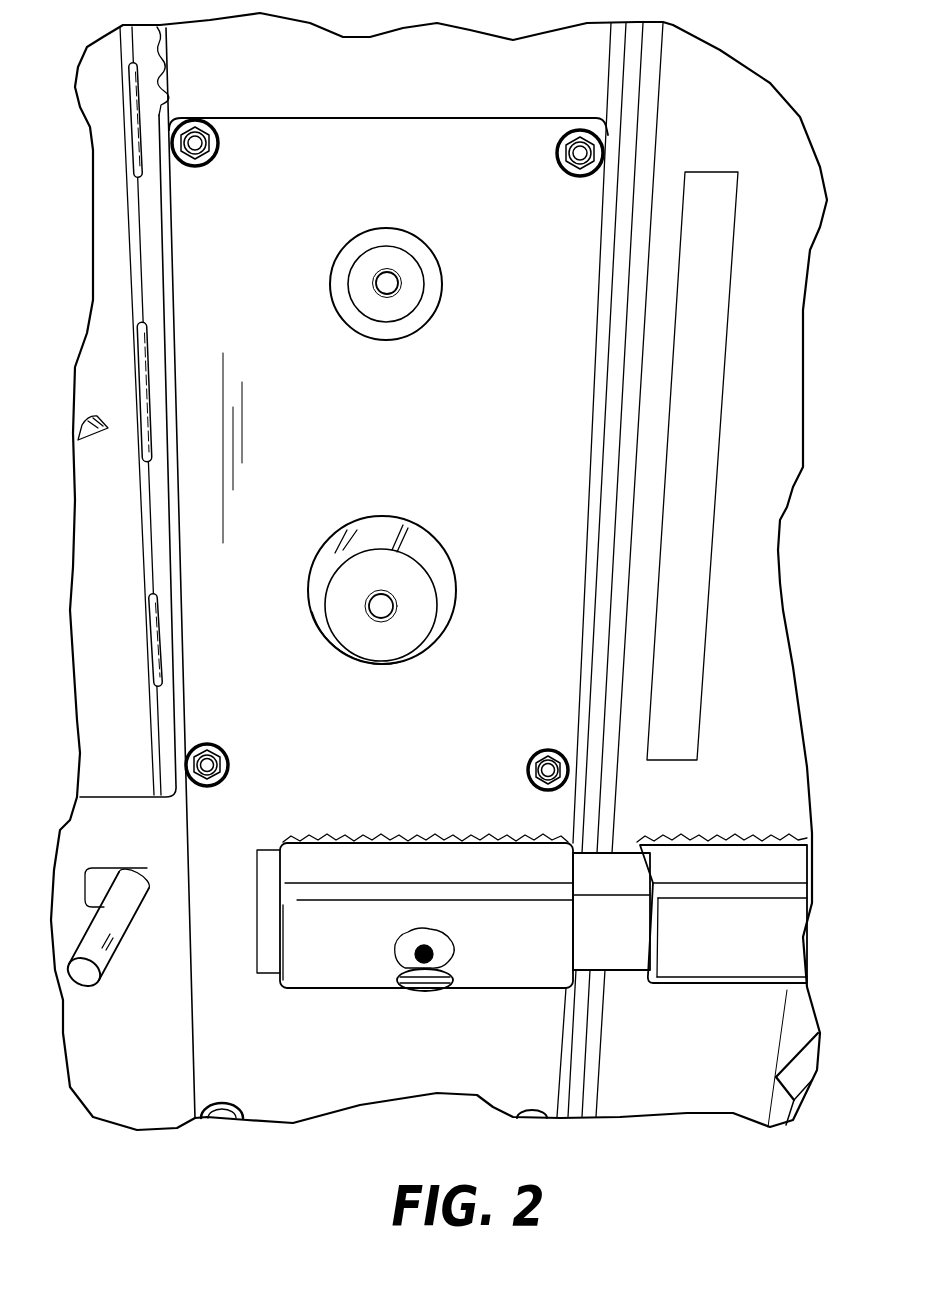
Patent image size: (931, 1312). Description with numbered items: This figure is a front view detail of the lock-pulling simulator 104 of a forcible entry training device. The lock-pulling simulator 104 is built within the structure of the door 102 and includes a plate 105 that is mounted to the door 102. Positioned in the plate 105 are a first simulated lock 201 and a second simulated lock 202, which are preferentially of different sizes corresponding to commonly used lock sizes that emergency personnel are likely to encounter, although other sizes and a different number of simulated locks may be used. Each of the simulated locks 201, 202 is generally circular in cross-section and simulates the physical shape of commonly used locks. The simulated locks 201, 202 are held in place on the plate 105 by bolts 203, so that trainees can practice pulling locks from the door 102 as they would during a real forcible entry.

The door 102 is at (452, 82).
The lock-pulling simulator 104 is at (677, 1063).
The plate 105 is at (510, 436).
The first simulated lock 201 is at (367, 519).
The second simulated lock 202 is at (352, 238).
The bolts 203 is at (393, 281).